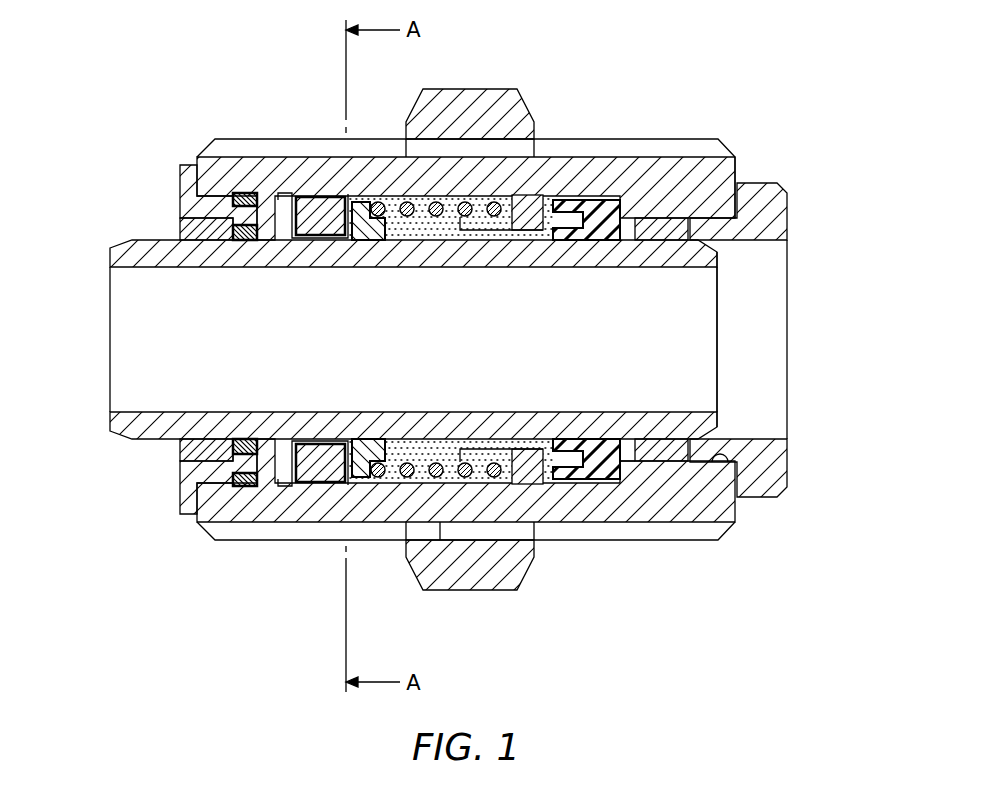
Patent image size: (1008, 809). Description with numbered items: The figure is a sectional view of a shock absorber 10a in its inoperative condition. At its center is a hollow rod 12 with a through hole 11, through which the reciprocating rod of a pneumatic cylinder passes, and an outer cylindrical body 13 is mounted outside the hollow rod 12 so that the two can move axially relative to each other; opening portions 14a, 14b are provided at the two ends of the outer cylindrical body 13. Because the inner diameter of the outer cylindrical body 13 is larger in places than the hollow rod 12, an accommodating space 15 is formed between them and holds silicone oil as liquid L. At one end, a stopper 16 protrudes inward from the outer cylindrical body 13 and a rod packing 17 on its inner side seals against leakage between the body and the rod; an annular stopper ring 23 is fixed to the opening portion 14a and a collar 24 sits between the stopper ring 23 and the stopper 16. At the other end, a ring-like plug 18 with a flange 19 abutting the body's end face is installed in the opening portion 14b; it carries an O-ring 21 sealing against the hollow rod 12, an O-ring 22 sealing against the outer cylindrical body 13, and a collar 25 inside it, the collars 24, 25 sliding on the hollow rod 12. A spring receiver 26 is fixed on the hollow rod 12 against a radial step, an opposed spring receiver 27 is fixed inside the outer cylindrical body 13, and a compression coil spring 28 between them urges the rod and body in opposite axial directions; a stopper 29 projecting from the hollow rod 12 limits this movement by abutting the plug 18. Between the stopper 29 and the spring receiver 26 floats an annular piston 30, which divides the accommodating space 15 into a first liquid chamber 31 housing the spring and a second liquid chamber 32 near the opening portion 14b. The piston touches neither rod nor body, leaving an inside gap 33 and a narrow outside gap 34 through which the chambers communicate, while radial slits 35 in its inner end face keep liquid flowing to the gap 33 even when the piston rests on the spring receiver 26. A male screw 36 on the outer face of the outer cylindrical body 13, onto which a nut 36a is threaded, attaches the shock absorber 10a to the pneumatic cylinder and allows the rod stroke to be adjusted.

The shock absorber 10a is at (812, 206).
The through hole 11 is at (690, 270).
The hollow rod 12 is at (122, 252).
The outer cylindrical body 13 is at (328, 175).
The opening portion 14a is at (720, 464).
The opening portion 14b is at (208, 528).
The accommodating space 15 is at (430, 448).
The stopper 16 is at (630, 462).
The rod packing 17 is at (582, 226).
The plug 18 is at (188, 190).
The flange 19 is at (185, 505).
The O-ring 21 is at (245, 242).
The O-ring 22 is at (245, 192).
The stopper ring 23 is at (760, 190).
The collar 24 is at (660, 222).
The collar 25 is at (180, 452).
The spring receiver 26 is at (362, 205).
The spring receiver 27 is at (527, 200).
The compression coil spring 28 is at (432, 216).
The stopper 29 is at (286, 196).
The annular piston 30 is at (318, 236).
The first liquid chamber 31 is at (495, 570).
The second liquid chamber 32 is at (283, 484).
The inside gap 33 is at (318, 444).
The outside gap 34 is at (320, 470).
The slits 35 is at (362, 488).
The male screw 36 is at (625, 170).
The nut 36a is at (465, 102).
The liquid L is at (452, 540).